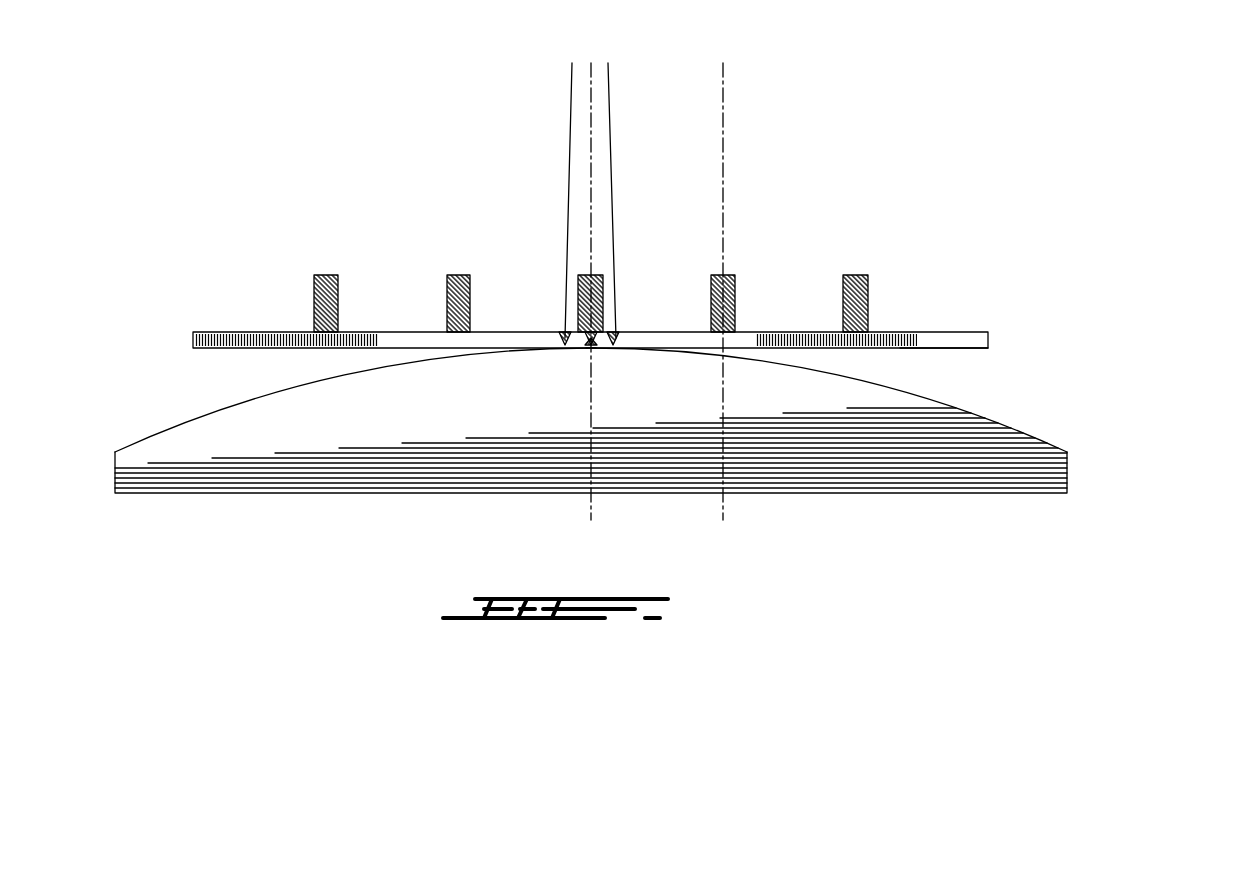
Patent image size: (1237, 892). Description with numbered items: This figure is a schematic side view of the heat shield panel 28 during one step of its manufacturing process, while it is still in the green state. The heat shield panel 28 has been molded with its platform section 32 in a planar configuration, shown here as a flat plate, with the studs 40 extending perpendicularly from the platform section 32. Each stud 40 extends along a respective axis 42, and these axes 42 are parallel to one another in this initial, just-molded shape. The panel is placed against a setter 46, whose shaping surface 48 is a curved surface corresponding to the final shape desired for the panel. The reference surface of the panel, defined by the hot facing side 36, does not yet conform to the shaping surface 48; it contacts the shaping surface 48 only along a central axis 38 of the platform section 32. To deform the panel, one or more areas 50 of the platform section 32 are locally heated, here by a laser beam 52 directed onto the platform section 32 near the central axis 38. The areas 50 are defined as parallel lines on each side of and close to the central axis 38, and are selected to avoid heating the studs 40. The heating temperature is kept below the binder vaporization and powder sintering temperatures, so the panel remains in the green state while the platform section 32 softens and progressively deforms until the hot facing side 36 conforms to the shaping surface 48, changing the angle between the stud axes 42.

The heat shield panel 28 is at (938, 227).
The platform section 32 is at (957, 332).
The hot facing side 36 is at (944, 350).
The central axis 38 is at (592, 349).
The studs 40 is at (853, 275).
The axis 42 is at (722, 509).
The setter 46 is at (1053, 448).
The shaping surface 48 is at (990, 418).
The areas 50 is at (564, 340).
The laser beam 52 is at (611, 111).